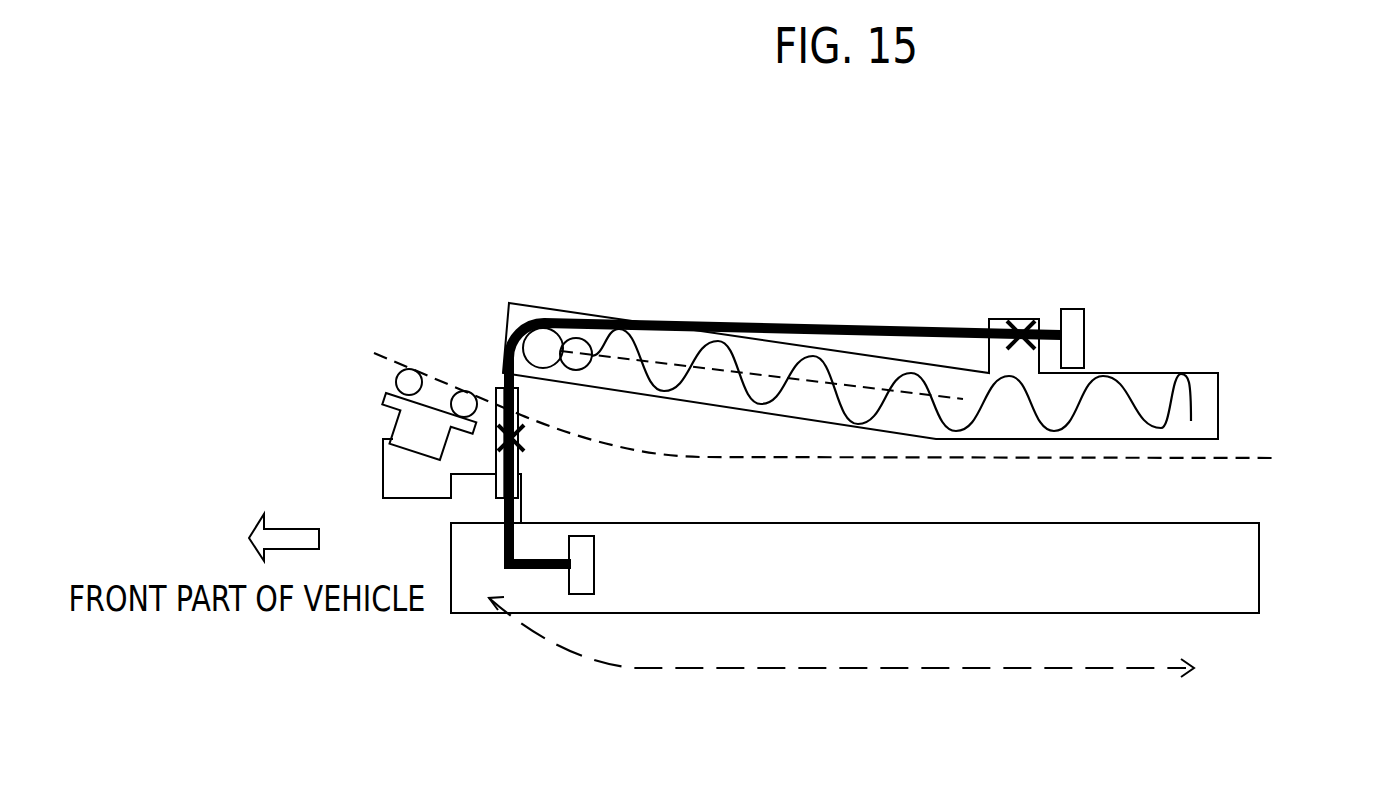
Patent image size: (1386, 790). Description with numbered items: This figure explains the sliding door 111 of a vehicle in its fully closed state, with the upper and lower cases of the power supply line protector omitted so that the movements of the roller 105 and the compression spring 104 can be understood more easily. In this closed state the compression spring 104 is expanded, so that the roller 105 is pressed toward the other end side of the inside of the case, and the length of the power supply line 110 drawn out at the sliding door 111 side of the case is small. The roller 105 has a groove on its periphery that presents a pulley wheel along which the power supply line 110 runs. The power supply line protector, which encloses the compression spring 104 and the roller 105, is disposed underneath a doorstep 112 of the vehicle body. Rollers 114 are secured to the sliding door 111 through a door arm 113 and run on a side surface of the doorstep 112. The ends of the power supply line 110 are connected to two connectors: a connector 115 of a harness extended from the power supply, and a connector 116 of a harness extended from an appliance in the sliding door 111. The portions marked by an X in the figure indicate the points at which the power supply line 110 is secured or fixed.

The compression spring 104 is at (1123, 390).
The roller 105 is at (543, 347).
The power supply line 110 is at (916, 330).
The sliding door 111 is at (1222, 570).
The doorstep 112 is at (1232, 447).
The door arm 113 is at (393, 475).
The rollers 114 is at (395, 376).
The connector 115 is at (1077, 327).
The connector 116 is at (583, 570).